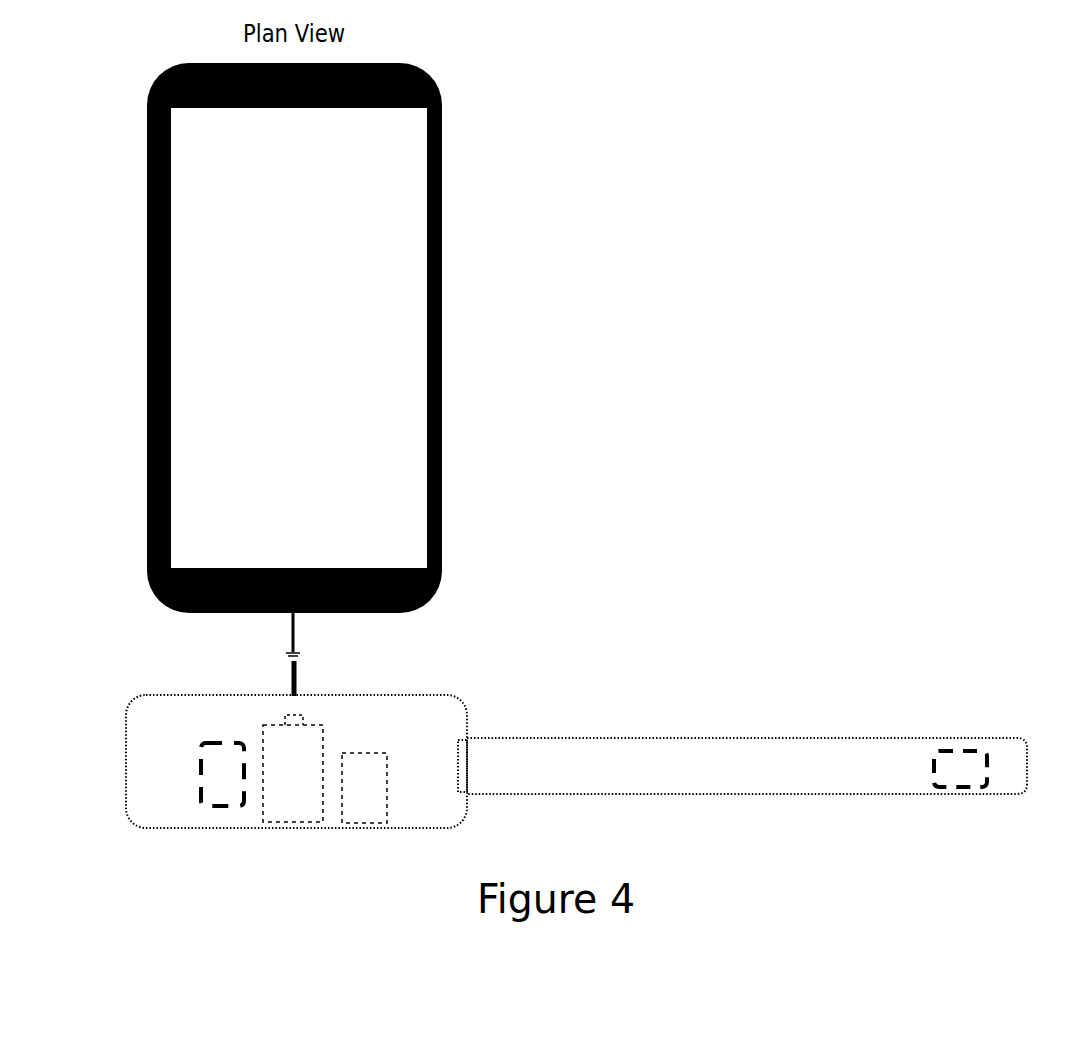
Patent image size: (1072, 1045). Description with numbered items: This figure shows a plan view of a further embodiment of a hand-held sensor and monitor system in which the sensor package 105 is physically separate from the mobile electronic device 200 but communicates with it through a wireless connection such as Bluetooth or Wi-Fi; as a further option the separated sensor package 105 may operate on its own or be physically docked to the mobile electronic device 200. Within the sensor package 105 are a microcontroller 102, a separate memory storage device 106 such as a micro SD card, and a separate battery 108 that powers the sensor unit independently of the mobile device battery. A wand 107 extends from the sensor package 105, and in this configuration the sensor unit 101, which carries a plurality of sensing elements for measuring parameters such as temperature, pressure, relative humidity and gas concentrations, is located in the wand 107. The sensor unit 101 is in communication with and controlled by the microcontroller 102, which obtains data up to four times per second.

The mobile electronic device 200 is at (430, 78).
The sensor package 105 is at (126, 793).
The wand 107 is at (1027, 673).
The microcontroller 102 is at (202, 755).
The battery 108 is at (283, 815).
The memory storage device 106 is at (368, 813).
The sensor unit 101 is at (950, 750).